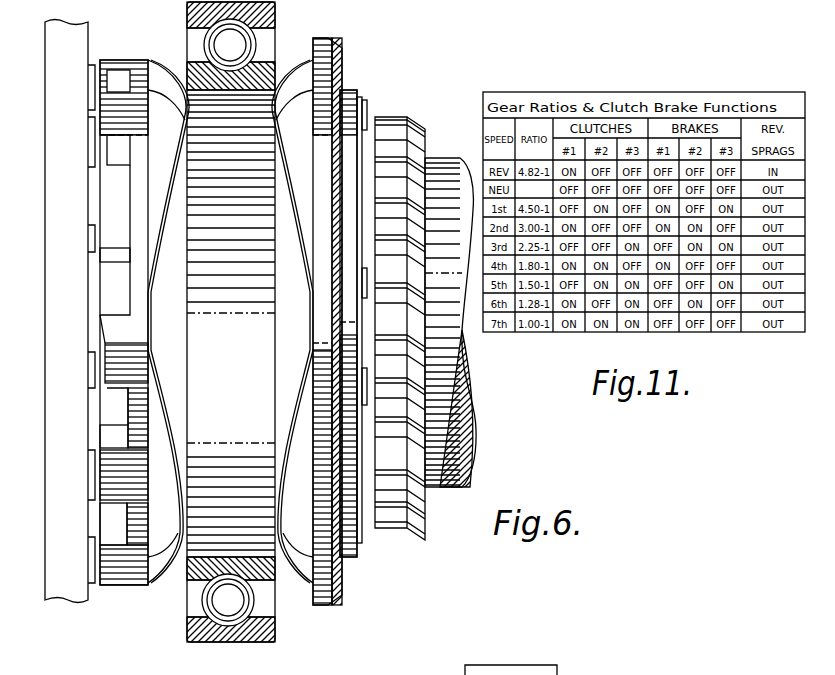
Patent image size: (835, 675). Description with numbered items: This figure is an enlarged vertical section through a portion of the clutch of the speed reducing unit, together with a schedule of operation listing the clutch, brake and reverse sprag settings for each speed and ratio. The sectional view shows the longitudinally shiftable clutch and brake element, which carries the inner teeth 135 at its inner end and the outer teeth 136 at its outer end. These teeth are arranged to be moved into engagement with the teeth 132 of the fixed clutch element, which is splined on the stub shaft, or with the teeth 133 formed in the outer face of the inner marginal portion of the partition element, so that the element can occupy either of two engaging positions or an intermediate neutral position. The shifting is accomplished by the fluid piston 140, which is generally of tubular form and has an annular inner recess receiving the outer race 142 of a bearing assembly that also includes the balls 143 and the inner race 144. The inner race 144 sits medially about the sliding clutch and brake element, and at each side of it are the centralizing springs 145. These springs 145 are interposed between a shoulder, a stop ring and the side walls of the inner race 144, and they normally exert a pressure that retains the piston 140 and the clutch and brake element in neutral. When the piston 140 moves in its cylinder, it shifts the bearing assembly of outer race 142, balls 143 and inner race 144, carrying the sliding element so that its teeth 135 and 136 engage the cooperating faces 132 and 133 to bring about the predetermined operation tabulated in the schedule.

The teeth of the fixed clutch element 132 is at (408, 513).
The teeth of the partition element 133 is at (98, 590).
The inner teeth 135 is at (122, 572).
The outer teeth 136 is at (362, 525).
The fluid piston 140 is at (471, 666).
The outer race 142 is at (262, 637).
The balls 143 is at (228, 605).
The inner race 144 is at (270, 573).
The centralizing springs 145 is at (174, 568).